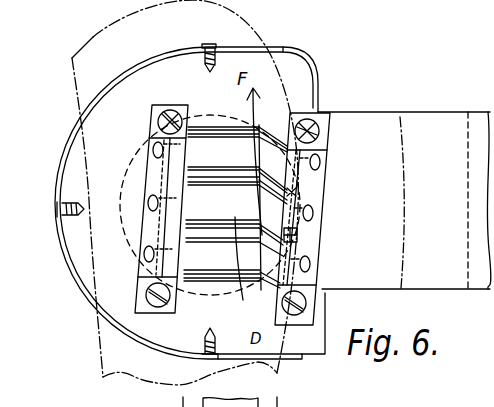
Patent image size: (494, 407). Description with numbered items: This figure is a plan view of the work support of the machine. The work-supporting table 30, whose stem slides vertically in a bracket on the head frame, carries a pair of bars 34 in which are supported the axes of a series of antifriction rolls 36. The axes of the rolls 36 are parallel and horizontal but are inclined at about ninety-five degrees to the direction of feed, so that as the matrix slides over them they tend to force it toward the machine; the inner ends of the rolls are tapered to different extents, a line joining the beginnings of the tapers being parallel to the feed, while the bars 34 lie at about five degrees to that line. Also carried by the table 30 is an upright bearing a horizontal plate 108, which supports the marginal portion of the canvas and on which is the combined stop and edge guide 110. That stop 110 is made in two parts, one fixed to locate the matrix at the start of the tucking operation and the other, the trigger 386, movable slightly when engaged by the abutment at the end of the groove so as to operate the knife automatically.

The work-supporting table 30 is at (312, 344).
The bars 34 is at (153, 227).
The antifriction rolls 36 is at (214, 147).
The horizontal plate 108 is at (426, 118).
The combined stop and edge guide 110 is at (289, 193).
The trigger 386 is at (298, 237).